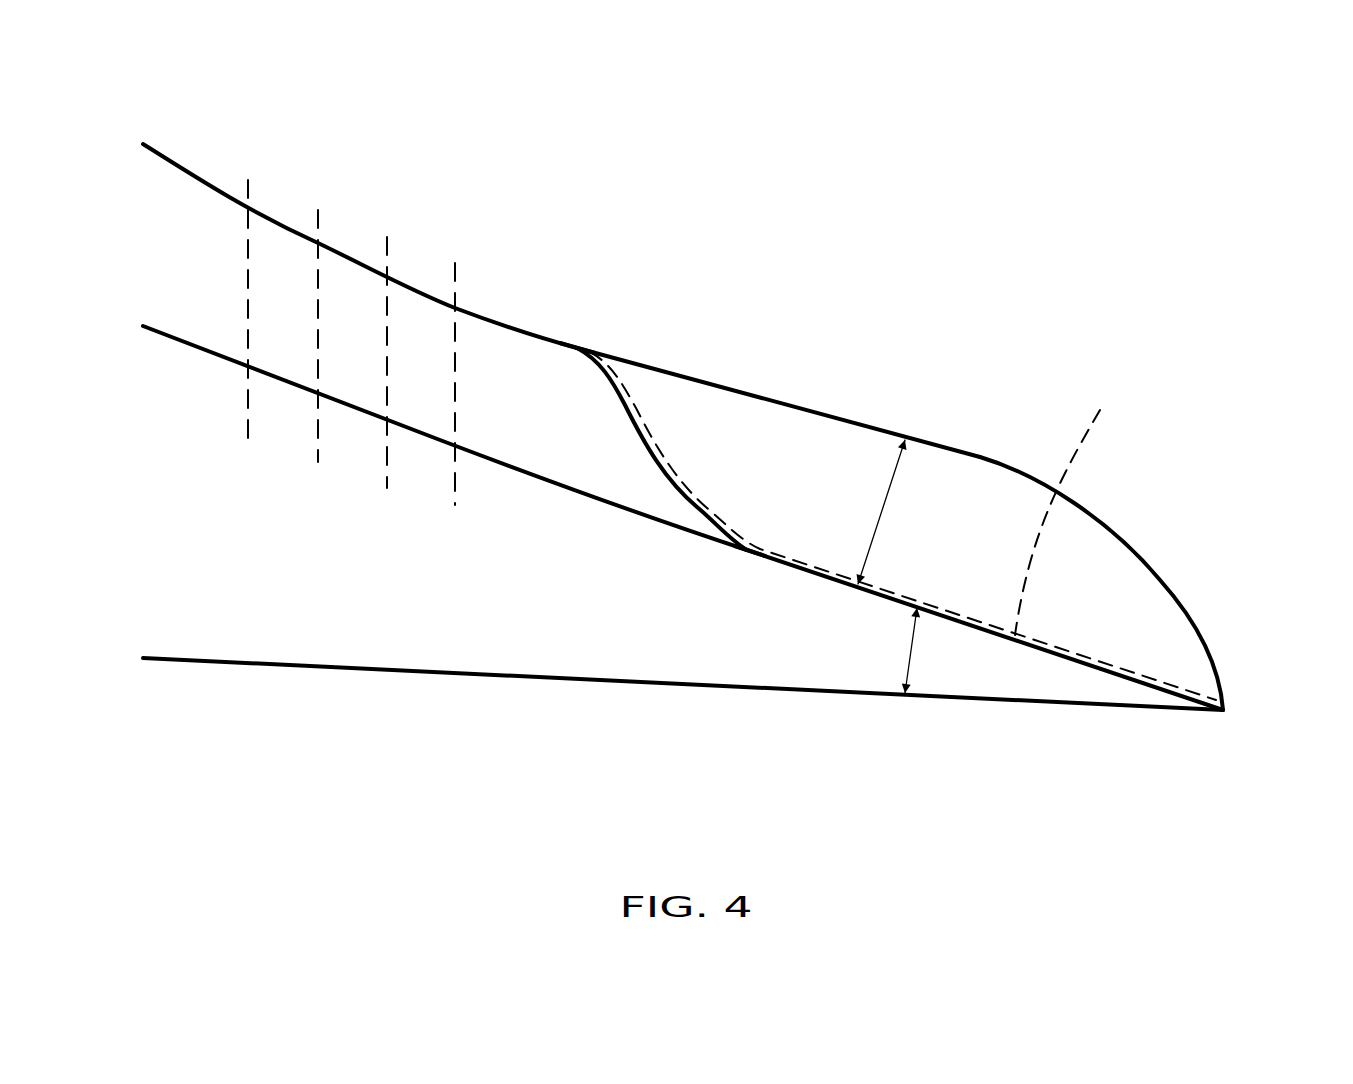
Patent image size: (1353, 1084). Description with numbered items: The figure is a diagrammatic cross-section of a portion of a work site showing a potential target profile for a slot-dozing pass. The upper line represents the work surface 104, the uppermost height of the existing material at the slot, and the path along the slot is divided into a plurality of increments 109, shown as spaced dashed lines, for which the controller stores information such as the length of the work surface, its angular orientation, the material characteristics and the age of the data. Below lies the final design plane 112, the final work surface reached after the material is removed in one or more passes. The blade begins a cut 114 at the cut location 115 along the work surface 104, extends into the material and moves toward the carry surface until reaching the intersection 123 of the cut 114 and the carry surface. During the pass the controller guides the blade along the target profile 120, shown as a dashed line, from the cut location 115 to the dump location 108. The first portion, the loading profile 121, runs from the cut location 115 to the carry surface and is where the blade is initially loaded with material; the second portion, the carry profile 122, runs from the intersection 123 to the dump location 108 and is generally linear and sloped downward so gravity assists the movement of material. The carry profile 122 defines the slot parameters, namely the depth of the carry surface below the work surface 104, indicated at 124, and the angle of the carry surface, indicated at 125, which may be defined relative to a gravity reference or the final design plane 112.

The work surface 104 is at (288, 228).
The dump location 108 is at (1185, 573).
The increments 109 is at (412, 475).
The final design plane 112 is at (298, 663).
The cut 114 is at (653, 450).
The cut location 115 is at (575, 343).
The target profile 120 is at (797, 467).
The loading profile 121 is at (624, 382).
The carry profile 122 is at (1069, 506).
The intersection 123 is at (748, 553).
The depth of the carry surface 124 is at (883, 508).
The angle of the carry surface 125 is at (911, 650).